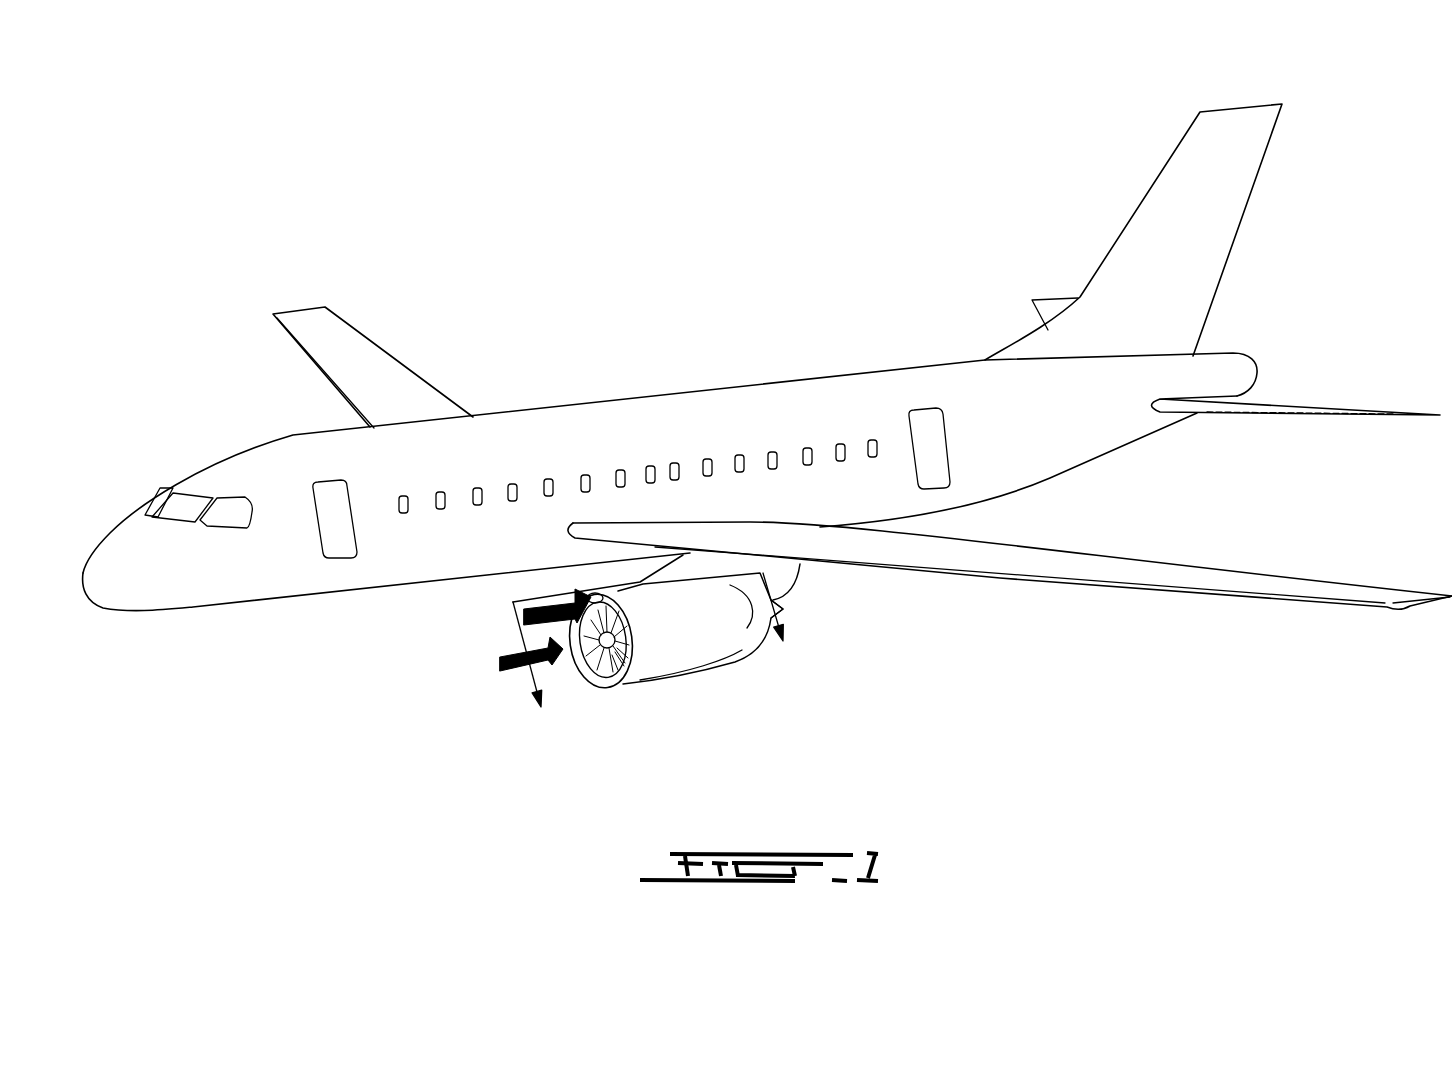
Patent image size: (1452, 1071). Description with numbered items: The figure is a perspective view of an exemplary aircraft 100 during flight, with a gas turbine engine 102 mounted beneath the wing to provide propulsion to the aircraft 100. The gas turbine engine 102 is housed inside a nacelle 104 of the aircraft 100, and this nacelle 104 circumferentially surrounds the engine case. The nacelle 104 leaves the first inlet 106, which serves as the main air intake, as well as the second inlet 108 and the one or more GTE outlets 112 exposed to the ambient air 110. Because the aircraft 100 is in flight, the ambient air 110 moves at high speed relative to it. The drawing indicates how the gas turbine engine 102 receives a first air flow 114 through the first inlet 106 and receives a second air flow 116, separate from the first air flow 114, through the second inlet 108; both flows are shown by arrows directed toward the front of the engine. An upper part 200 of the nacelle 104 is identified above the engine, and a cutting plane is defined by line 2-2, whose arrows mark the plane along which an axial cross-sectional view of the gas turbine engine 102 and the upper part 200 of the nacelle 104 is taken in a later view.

The aircraft 100 is at (347, 212).
The gas turbine engine 102 is at (615, 652).
The nacelle 104 is at (685, 652).
The first inlet 106 is at (571, 648).
The second inlet 108 is at (597, 594).
The ambient air 110 is at (390, 733).
The GTE outlets 112 is at (812, 608).
The first air flow 114 is at (521, 670).
The second air flow 116 is at (558, 603).
The upper part of nacelle 200 is at (632, 603).
The cutting plane line 2 is at (651, 655).